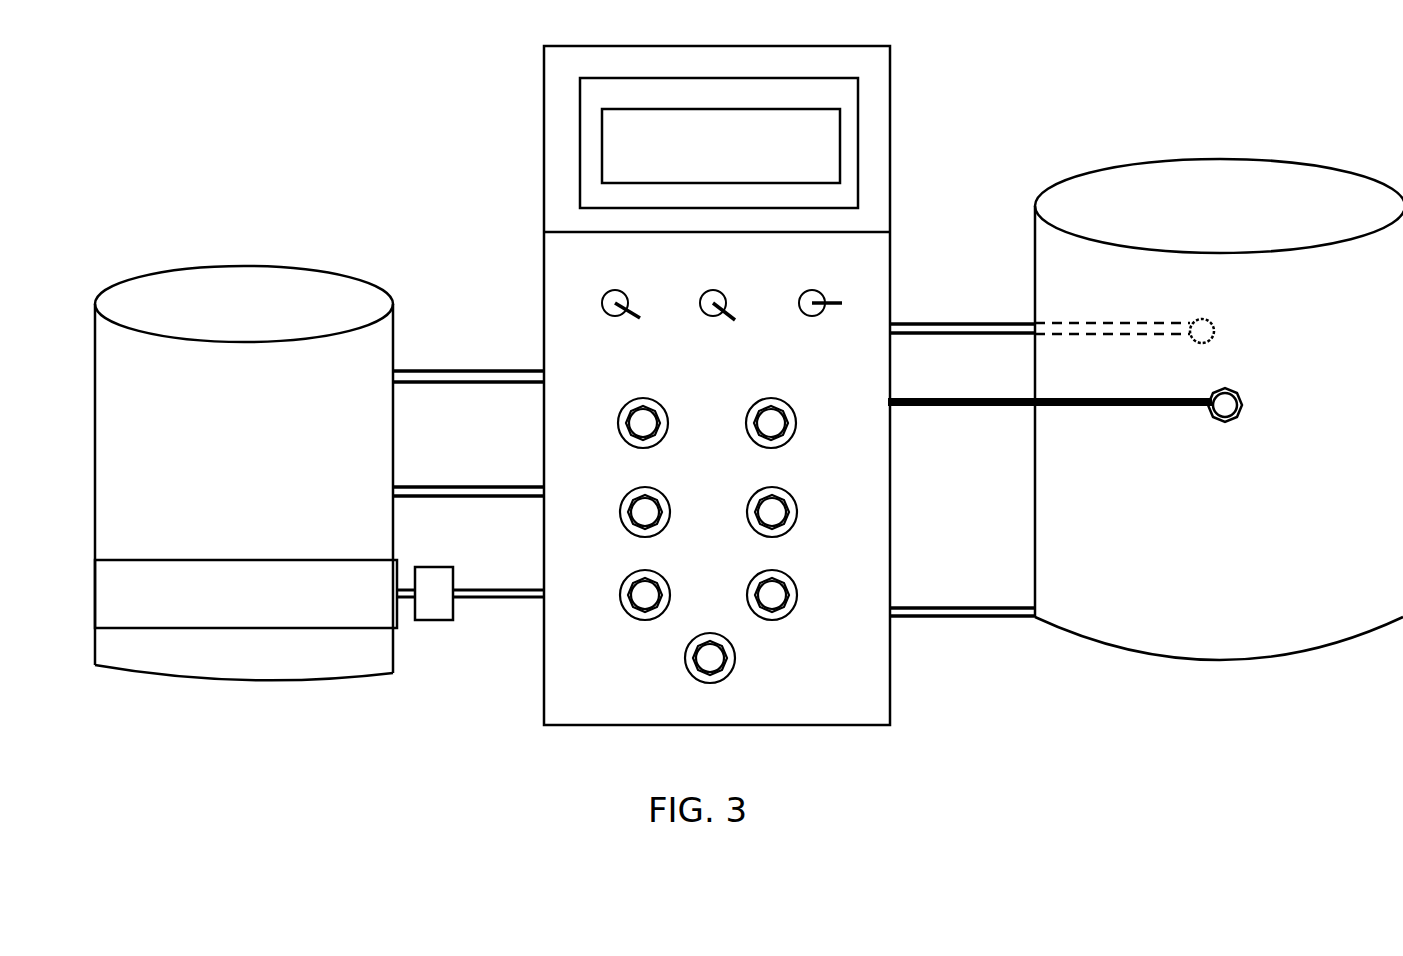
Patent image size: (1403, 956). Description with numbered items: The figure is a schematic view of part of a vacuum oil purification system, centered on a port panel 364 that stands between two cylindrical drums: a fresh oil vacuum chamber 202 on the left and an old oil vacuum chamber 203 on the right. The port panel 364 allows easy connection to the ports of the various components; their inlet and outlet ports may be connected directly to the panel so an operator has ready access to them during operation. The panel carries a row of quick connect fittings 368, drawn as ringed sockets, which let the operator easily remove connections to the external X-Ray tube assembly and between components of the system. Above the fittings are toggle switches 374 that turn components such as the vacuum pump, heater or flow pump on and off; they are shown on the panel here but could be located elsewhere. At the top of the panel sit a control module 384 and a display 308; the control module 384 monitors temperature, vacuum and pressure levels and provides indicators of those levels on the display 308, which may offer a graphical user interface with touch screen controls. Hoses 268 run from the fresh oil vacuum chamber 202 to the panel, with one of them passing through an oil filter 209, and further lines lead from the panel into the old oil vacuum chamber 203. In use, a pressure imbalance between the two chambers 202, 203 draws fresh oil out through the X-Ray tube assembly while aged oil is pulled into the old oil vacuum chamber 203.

The fresh oil vacuum chamber 202 is at (246, 473).
The old oil vacuum chamber 203 is at (1219, 409).
The oil filter 209 is at (423, 622).
The hoses 268 is at (460, 387).
The display 308 is at (828, 148).
The port panel 364 is at (846, 515).
The quick connect fittings 368 is at (750, 397).
The toggle switches 374 is at (794, 287).
The control module 384 is at (587, 150).